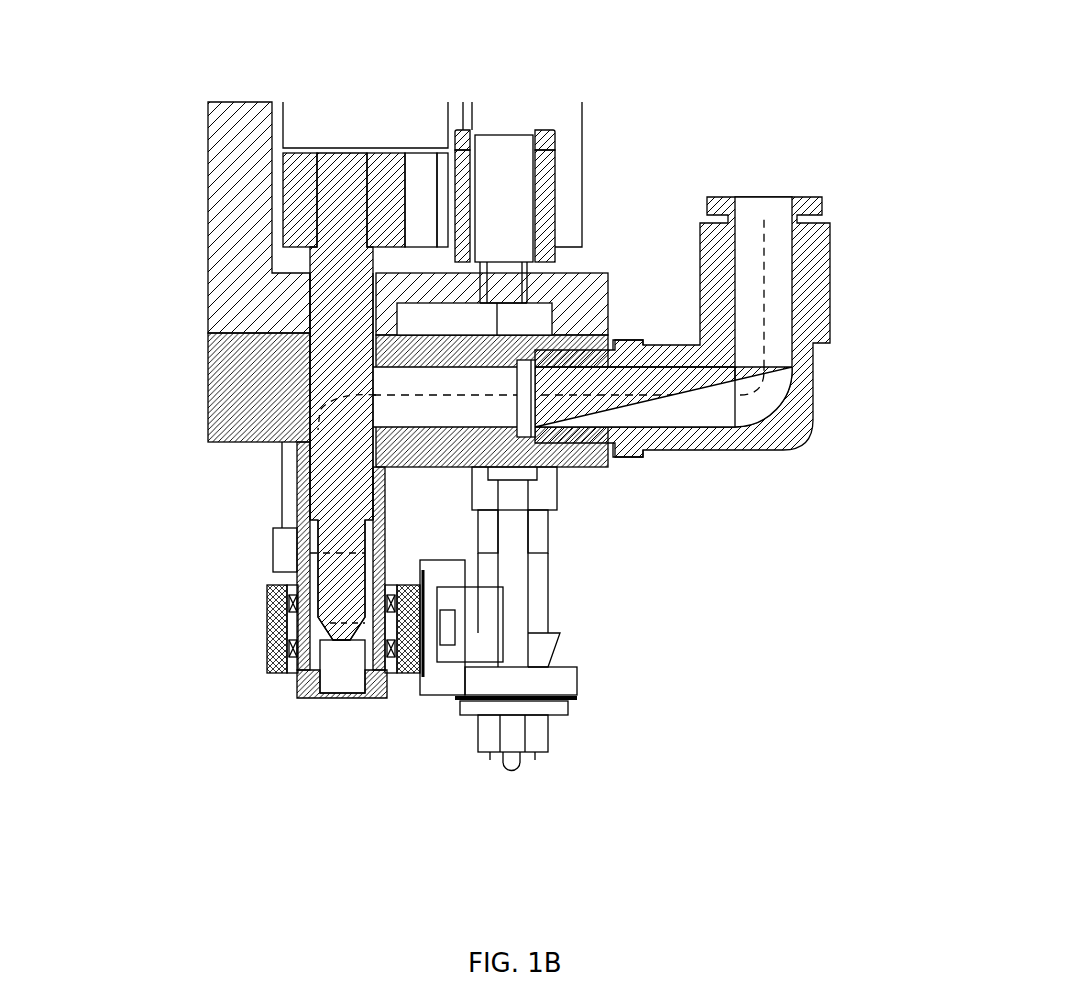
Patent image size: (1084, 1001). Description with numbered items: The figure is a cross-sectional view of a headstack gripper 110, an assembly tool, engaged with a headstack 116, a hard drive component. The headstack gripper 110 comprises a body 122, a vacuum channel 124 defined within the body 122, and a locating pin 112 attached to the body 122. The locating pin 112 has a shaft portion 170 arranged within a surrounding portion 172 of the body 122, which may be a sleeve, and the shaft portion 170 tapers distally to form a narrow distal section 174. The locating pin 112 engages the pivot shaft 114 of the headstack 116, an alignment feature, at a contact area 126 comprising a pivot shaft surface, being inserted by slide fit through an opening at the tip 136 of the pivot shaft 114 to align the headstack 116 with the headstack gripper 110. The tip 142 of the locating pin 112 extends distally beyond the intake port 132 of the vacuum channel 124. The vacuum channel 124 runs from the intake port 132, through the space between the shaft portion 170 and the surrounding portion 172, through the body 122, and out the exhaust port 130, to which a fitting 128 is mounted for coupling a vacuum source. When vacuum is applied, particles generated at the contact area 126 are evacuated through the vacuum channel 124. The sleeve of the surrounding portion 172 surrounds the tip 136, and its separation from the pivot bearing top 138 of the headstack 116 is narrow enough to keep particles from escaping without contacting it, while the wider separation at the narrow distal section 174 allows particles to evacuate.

The headstack gripper 110 is at (505, 158).
The locating pin 112 is at (360, 160).
The pivot shaft 114 is at (310, 690).
The headstack 116 is at (406, 662).
The body 122 is at (183, 139).
The vacuum channel 124 is at (480, 412).
The contact area 126 is at (342, 565).
The fitting 128 is at (782, 428).
The exhaust port 130 is at (613, 340).
The intake port 132 is at (300, 560).
The tip 136 is at (288, 598).
The pivot bearing top 138 is at (295, 583).
The tip 142 is at (288, 648).
The shaft portion 170 is at (330, 485).
The surrounding portion 172 is at (385, 550).
The narrow distal section 174 is at (367, 575).